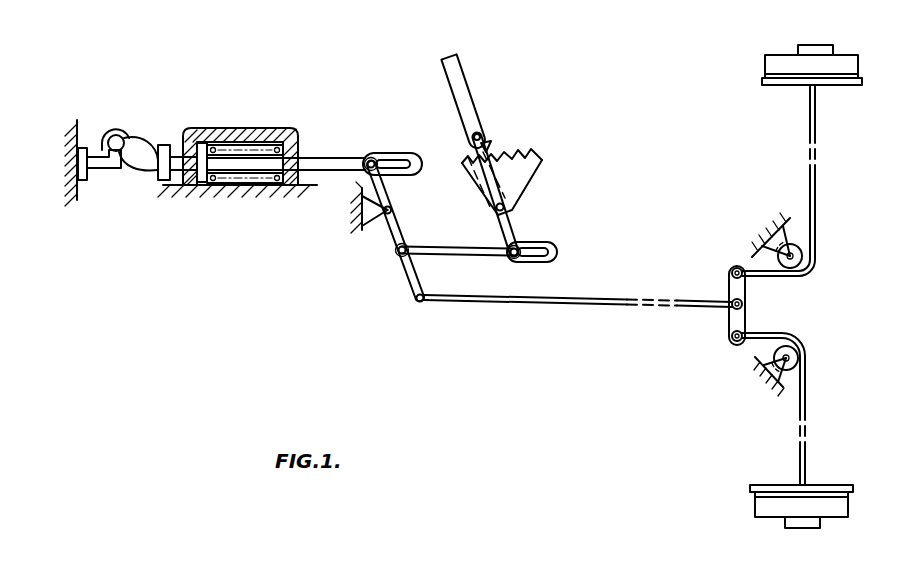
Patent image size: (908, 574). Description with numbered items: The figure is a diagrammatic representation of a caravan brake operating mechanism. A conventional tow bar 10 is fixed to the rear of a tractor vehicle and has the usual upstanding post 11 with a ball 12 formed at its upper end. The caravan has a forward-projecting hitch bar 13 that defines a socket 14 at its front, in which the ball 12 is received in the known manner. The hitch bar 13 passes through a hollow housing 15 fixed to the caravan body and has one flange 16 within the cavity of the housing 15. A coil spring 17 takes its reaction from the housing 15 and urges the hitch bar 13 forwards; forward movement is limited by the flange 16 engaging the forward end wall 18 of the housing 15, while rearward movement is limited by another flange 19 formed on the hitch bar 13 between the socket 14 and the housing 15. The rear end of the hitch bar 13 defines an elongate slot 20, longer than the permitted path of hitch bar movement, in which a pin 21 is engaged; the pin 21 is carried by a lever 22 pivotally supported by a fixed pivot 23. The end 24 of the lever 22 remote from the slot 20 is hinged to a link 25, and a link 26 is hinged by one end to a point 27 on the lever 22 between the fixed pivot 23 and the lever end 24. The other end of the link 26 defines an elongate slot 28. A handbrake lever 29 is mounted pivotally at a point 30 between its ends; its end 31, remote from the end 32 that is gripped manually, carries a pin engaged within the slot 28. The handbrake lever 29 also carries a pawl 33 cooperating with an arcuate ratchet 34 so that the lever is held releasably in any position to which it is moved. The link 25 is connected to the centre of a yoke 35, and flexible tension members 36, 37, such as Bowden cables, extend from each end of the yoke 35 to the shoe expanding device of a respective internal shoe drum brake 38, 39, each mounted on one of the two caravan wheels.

The tow bar 10 is at (99, 175).
The upstanding post 11 is at (124, 167).
The ball 12 is at (121, 140).
The hitch bar 13 is at (270, 158).
The socket 14 is at (113, 130).
The hollow housing 15 is at (243, 130).
The flange 16 is at (215, 146).
The coil spring 17 is at (245, 185).
The forward end wall 18 is at (200, 150).
The flange 19 is at (162, 181).
The elongate slot 20 is at (415, 154).
The pin 21 is at (367, 159).
The lever 22 is at (412, 282).
The fixed pivot 23 is at (392, 210).
The lever end 24 is at (416, 301).
The link 25 is at (565, 306).
The link 26 is at (466, 248).
The pivot point 27 is at (396, 252).
The elongate slot 28 is at (556, 250).
The handbrake lever 29 is at (476, 122).
The pivot point 30 is at (505, 208).
The handbrake lever end 31 is at (513, 259).
The handbrake lever end 32 is at (456, 64).
The pawl 33 is at (488, 146).
The arcuate ratchet 34 is at (530, 152).
The yoke 35 is at (747, 296).
The flexible tension member 36 is at (815, 200).
The flexible tension member 37 is at (806, 390).
The internal shoe drum brake 38 is at (850, 65).
The internal shoe drum brake 39 is at (840, 510).